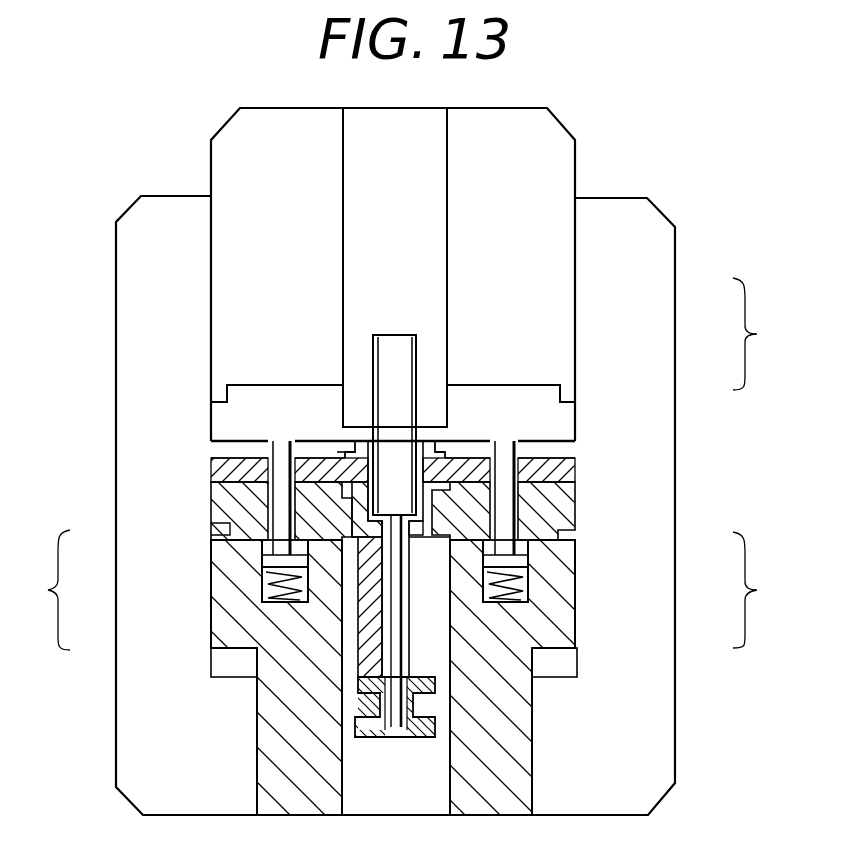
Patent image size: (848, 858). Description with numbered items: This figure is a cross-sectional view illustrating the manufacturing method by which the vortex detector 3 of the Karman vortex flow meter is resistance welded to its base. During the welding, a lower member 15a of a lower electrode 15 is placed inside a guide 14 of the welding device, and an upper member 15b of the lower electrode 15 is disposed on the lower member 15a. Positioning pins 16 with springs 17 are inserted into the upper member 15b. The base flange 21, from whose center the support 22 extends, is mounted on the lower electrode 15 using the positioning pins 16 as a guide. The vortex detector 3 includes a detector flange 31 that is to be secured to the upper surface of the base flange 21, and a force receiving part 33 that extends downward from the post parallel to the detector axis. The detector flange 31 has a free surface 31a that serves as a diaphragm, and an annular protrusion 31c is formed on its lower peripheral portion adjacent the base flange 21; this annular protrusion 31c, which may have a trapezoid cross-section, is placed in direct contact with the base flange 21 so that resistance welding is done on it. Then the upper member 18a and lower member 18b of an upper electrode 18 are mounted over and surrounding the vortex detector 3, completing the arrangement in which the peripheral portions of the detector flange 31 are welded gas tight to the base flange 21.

The vortex detector 3 is at (372, 349).
The guide 14 is at (663, 427).
The lower electrode 15 is at (408, 590).
The lower member of lower electrode 15a is at (232, 530).
The upper member of lower electrode 15b is at (216, 598).
The positioning pins 16 is at (283, 496).
The springs 17 is at (520, 582).
The upper electrode 18 is at (764, 334).
The upper member of upper electrode 18a is at (567, 290).
The lower member of upper electrode 18b is at (573, 406).
The base flange 21 is at (230, 472).
The support 22 is at (365, 642).
The detector flange 31 is at (346, 437).
The free surface 31a is at (356, 438).
The annular protrusion 31c is at (302, 441).
The force receiving part 33 is at (403, 643).